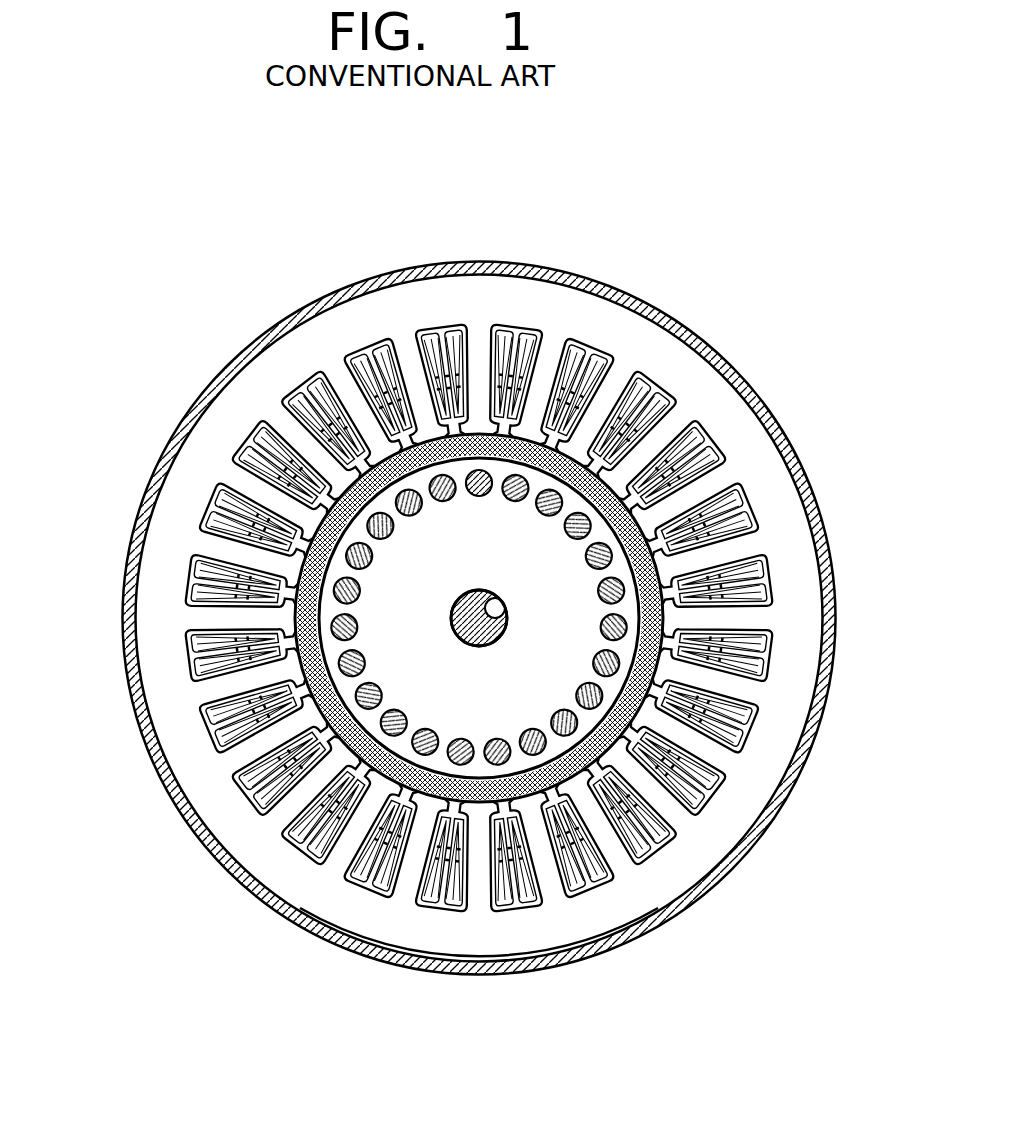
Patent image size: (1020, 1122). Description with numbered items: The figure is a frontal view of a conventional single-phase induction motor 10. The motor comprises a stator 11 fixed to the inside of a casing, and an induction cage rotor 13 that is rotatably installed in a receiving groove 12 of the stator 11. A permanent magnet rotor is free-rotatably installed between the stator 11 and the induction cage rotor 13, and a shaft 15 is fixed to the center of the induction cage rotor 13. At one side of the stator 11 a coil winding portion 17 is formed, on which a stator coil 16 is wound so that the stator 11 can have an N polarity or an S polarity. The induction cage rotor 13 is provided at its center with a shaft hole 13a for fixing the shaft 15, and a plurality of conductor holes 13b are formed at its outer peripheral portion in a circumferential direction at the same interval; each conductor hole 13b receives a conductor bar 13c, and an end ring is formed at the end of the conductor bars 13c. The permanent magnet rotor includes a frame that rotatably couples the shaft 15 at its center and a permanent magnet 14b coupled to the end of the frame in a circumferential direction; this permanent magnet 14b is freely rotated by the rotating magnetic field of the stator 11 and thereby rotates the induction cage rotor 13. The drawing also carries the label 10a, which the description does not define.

The single-phase induction motor 10 is at (203, 318).
The casing bottom 10a is at (422, 962).
The stator 11 is at (180, 476).
The receiving groove 12 is at (770, 673).
The induction cage rotor 13 is at (410, 692).
The shaft hole 13a is at (498, 619).
The conductor hole 13b is at (412, 755).
The conductor bar 13c is at (336, 585).
The permanent magnet 14b is at (323, 700).
The shaft 15 is at (462, 625).
The stator coil 16 is at (190, 636).
The coil winding portion 17 is at (550, 880).